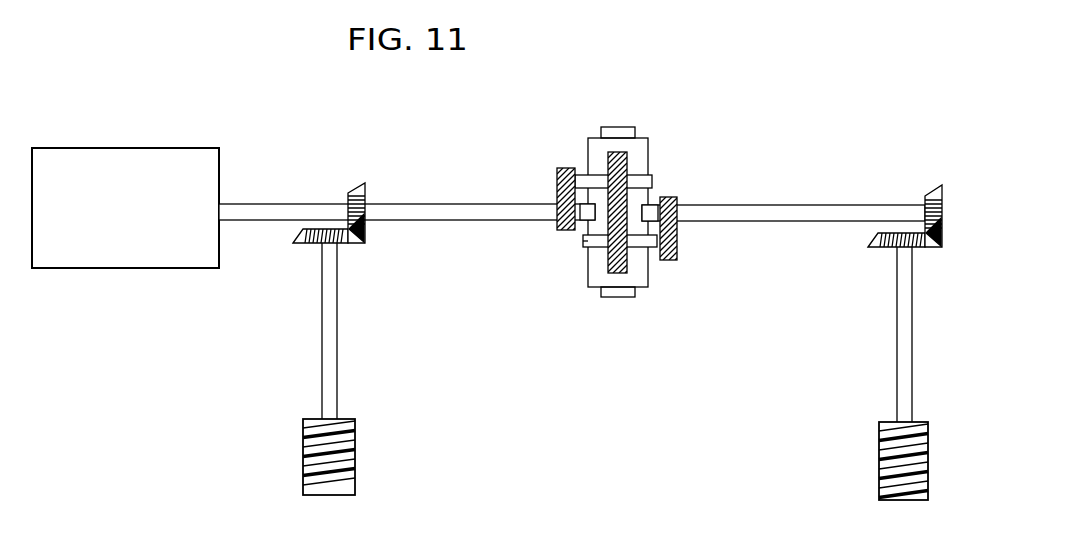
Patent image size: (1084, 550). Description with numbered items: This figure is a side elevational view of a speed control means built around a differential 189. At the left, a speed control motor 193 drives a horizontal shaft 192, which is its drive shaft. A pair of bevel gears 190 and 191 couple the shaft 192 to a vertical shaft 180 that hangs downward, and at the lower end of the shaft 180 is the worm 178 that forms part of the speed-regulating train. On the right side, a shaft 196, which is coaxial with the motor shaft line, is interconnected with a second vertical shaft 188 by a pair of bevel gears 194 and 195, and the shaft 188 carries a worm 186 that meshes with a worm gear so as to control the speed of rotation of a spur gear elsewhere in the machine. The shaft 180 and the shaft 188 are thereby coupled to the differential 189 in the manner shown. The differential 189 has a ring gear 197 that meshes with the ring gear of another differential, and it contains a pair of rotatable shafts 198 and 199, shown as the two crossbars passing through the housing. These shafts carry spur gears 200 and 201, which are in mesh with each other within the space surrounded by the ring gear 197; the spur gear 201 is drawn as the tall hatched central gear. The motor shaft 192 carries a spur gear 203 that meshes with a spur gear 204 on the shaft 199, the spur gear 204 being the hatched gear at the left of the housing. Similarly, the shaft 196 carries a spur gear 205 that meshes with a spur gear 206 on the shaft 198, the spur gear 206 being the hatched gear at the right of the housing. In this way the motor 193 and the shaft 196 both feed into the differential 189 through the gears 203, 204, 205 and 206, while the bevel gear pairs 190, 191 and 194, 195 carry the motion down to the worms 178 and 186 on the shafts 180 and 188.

The speed control motor 193 is at (161, 268).
The shaft 192 is at (407, 222).
The shaft 196 is at (757, 222).
The bevel gear 190 is at (313, 247).
The bevel gear 191 is at (361, 193).
The shaft 180 is at (338, 333).
The worm 178 is at (356, 455).
The differential 189 is at (593, 300).
The ring gear 197 is at (630, 298).
The spur gear 203 is at (556, 223).
The spur gear 205 is at (680, 201).
The rotatable shaft 199 is at (655, 180).
The spur gear 200 is at (640, 272).
The rotatable shaft 198 is at (584, 243).
The spur gear 201 is at (625, 165).
The spur gear 204 is at (557, 186).
The spur gear 206 is at (678, 247).
The bevel gear 195 is at (886, 250).
The bevel gear 194 is at (933, 190).
The shaft 188 is at (897, 331).
The worm 186 is at (880, 440).